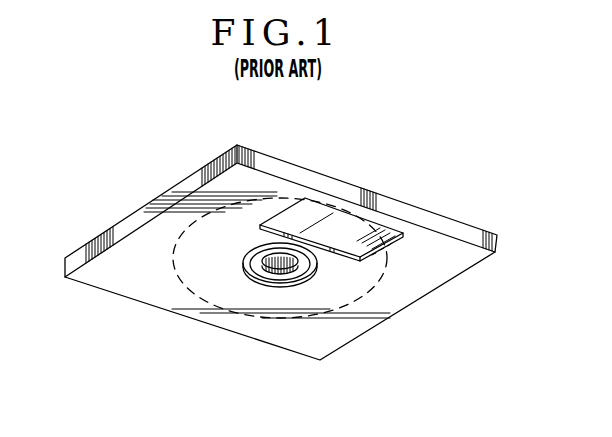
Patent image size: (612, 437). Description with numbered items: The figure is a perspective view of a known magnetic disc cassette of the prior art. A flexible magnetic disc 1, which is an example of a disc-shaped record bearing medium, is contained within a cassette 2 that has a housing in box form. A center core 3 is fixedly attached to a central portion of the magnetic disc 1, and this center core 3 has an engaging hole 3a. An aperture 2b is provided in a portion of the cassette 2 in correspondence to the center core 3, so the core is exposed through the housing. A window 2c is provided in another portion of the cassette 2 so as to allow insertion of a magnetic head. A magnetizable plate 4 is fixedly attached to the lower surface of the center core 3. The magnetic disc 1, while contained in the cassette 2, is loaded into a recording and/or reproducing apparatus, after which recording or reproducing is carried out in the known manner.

The flexible magnetic disc 1 is at (360, 229).
The cassette 2 is at (288, 173).
The aperture 2b is at (307, 281).
The window 2c is at (403, 243).
The center core 3 is at (310, 250).
The engaging hole 3a is at (298, 259).
The magnetizable plate 4 is at (252, 272).